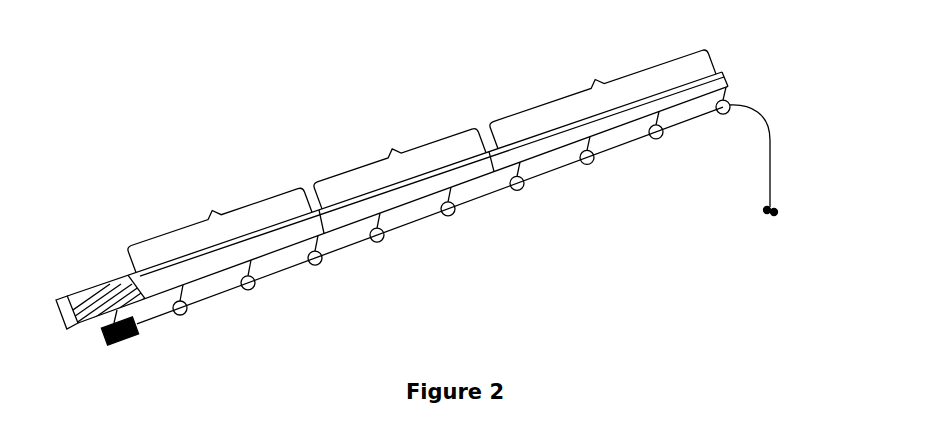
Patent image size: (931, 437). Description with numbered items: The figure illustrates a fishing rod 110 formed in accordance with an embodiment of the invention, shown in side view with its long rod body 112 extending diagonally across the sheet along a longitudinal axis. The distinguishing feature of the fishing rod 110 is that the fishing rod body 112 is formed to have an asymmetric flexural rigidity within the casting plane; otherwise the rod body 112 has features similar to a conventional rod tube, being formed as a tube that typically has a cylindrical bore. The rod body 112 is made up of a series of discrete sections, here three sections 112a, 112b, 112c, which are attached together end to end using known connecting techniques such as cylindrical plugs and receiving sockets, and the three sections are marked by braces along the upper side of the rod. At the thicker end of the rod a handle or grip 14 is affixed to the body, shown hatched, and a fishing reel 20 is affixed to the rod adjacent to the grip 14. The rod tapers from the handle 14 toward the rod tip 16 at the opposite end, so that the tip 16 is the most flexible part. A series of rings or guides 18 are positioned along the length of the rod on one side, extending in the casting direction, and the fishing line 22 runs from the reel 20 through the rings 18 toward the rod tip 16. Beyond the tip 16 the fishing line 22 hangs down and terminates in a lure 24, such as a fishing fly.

The handle or grip 14 is at (95, 292).
The rod tip 16 is at (725, 79).
The rings or guides 18 is at (185, 313).
The fishing reel 20 is at (118, 345).
The fishing line 22 is at (283, 272).
The lure 24 is at (769, 216).
The fishing rod 110 is at (482, 298).
The fishing rod body 112 is at (460, 144).
The first rod body section 112a is at (220, 228).
The second rod body section 112b is at (400, 165).
The third rod body section 112c is at (603, 99).